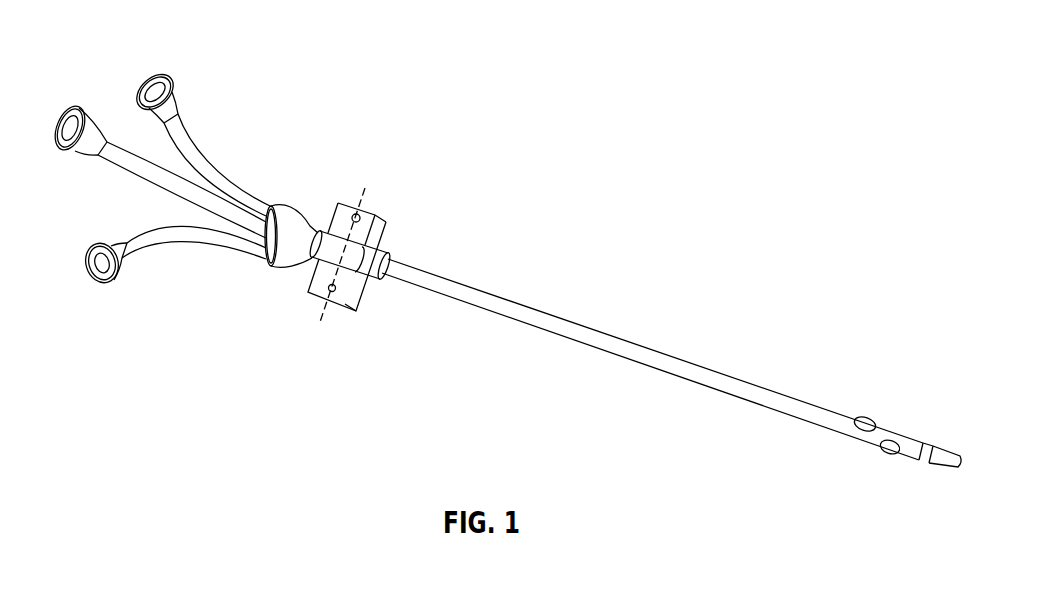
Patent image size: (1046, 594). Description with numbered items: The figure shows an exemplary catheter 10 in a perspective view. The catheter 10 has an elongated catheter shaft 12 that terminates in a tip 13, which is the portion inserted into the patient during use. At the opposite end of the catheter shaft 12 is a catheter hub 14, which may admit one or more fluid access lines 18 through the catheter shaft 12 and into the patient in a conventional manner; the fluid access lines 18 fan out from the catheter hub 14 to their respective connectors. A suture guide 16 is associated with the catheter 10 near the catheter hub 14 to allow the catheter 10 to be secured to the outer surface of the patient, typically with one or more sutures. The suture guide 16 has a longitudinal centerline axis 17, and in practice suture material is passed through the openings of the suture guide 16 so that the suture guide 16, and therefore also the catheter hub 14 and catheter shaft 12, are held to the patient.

The catheter 10 is at (105, 42).
The elongated catheter shaft 12 is at (497, 314).
The tip 13 is at (953, 450).
The catheter hub 14 is at (267, 214).
The suture guide 16 is at (360, 214).
The longitudinal centerline axis 17 is at (323, 321).
The fluid access lines 18 is at (199, 152).